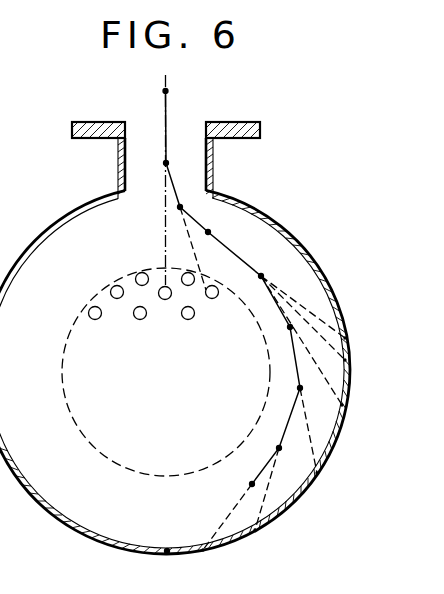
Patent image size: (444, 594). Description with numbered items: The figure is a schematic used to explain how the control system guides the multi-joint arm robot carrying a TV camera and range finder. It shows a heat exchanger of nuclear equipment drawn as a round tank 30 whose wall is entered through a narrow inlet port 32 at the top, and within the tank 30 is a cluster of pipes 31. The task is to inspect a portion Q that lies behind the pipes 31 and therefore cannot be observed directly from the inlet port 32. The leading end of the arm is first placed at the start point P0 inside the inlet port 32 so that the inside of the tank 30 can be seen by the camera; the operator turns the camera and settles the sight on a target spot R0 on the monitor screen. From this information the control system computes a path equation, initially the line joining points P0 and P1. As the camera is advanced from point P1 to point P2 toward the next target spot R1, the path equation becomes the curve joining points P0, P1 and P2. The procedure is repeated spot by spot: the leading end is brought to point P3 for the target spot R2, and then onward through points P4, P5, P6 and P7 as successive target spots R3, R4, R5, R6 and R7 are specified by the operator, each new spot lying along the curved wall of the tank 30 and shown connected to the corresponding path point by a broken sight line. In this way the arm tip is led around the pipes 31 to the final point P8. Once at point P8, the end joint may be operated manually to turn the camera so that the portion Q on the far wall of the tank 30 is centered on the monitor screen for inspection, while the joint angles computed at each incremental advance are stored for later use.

The tank 30 is at (260, 130).
The pipes 31 is at (60, 402).
The inlet port 32 is at (142, 138).
The start point P0 is at (180, 87).
The path point P1 is at (182, 159).
The path point P2 is at (196, 207).
The path point P3 is at (224, 232).
The path point P4 is at (276, 266).
The path point P5 is at (278, 340).
The path point P6 is at (286, 384).
The path point P7 is at (292, 462).
The final point P8 is at (236, 484).
The target spot R0 is at (166, 269).
The target spot R1 is at (206, 320).
The target spot R2 is at (362, 339).
The target spot R3 is at (365, 372).
The target spot R4 is at (361, 412).
The target spot R5 is at (332, 488).
The target spot R6 is at (270, 547).
The target spot R7 is at (206, 566).
The portion to be inspected Q is at (166, 548).